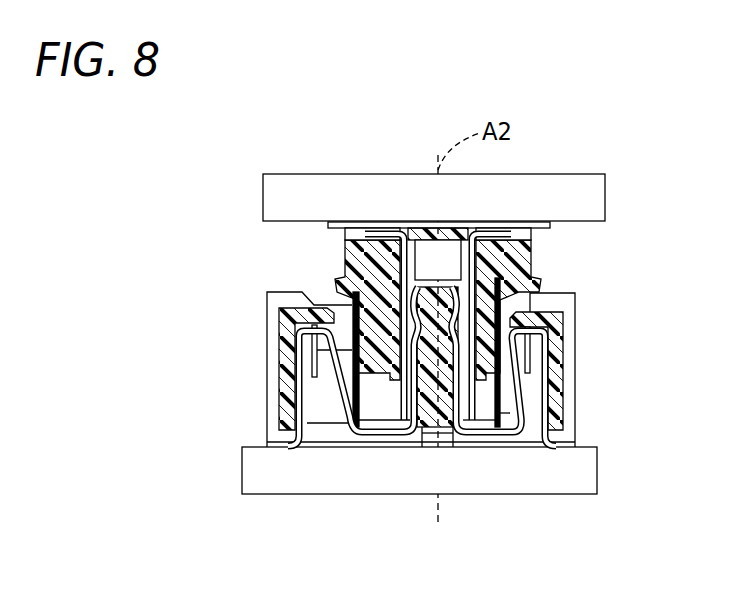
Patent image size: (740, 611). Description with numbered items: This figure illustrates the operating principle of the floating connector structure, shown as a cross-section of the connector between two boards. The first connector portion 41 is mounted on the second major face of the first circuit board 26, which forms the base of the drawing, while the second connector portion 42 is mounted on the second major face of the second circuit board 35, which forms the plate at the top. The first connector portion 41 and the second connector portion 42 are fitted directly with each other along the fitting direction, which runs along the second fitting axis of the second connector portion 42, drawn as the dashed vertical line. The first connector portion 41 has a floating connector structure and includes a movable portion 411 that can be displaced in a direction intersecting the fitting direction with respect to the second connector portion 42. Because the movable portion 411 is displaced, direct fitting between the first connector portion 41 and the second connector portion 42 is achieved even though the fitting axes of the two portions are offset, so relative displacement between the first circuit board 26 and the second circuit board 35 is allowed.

The first circuit board 26 is at (303, 482).
The second circuit board 35 is at (583, 187).
The first connector portion 41 is at (464, 418).
The movable portion 411 is at (450, 435).
The second connector portion 42 is at (548, 255).